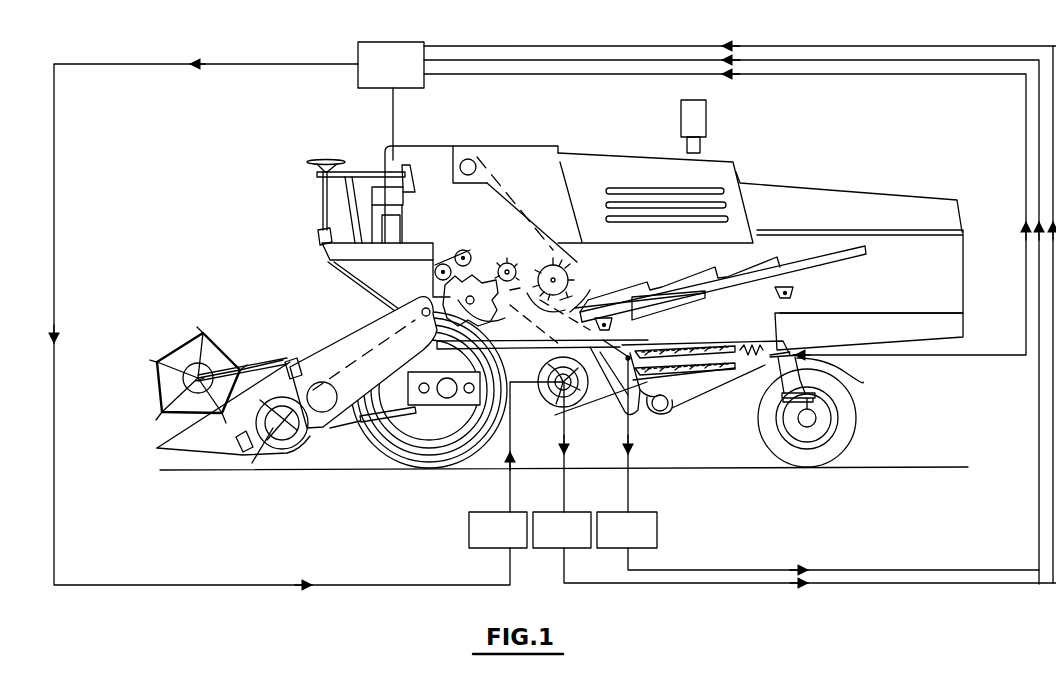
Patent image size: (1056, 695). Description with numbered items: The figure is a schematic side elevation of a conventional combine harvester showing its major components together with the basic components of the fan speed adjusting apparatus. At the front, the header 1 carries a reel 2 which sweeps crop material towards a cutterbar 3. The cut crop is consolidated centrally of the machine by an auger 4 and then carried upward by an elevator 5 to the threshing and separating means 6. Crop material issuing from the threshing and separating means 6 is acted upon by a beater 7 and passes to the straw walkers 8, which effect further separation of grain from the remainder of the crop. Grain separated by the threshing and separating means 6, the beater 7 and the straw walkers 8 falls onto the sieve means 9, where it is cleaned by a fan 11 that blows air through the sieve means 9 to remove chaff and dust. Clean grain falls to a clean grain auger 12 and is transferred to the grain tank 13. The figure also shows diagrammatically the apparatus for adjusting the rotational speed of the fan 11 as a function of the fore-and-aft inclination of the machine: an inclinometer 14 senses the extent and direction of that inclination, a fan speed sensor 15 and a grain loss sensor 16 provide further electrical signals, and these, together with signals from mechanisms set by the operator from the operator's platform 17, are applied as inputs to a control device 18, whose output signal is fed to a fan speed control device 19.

The header 1 is at (247, 356).
The reel 2 is at (180, 347).
The cutterbar 3 is at (250, 463).
The auger 4 is at (287, 440).
The elevator 5 is at (350, 348).
The threshing and separating means 6 is at (478, 258).
The beater 7 is at (566, 280).
The straw walkers 8 is at (692, 277).
The sieve means 9 is at (704, 345).
The fan 11 is at (540, 403).
The clean grain auger 12 is at (630, 410).
The grain tank 13 is at (437, 165).
The inclinometer 14 is at (613, 542).
The fan speed sensor 15 is at (576, 542).
The grain loss sensor 16 is at (828, 411).
The operator's platform 17 is at (326, 150).
The control device 18 is at (374, 75).
The fan speed control device 19 is at (511, 542).